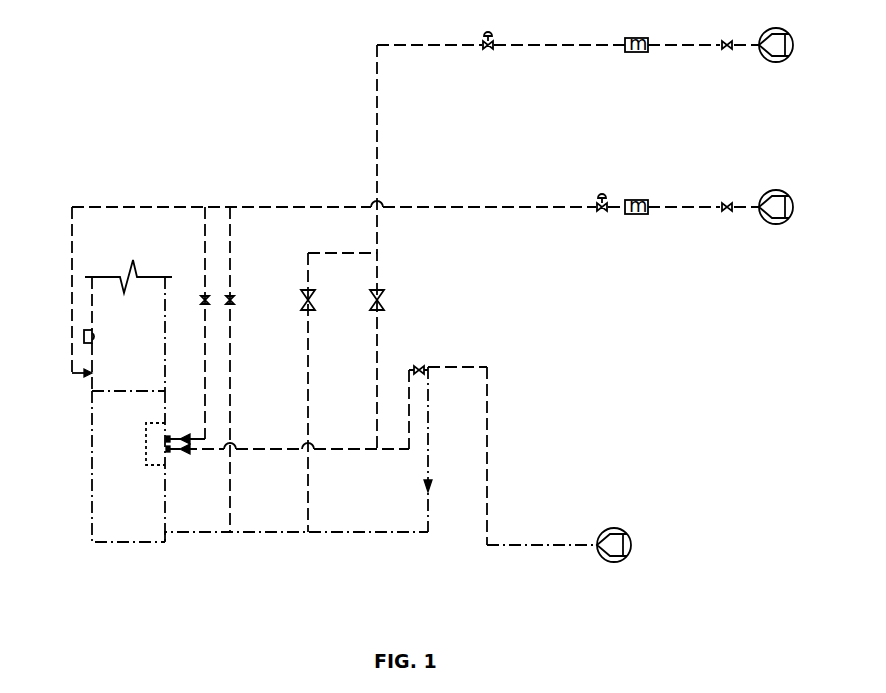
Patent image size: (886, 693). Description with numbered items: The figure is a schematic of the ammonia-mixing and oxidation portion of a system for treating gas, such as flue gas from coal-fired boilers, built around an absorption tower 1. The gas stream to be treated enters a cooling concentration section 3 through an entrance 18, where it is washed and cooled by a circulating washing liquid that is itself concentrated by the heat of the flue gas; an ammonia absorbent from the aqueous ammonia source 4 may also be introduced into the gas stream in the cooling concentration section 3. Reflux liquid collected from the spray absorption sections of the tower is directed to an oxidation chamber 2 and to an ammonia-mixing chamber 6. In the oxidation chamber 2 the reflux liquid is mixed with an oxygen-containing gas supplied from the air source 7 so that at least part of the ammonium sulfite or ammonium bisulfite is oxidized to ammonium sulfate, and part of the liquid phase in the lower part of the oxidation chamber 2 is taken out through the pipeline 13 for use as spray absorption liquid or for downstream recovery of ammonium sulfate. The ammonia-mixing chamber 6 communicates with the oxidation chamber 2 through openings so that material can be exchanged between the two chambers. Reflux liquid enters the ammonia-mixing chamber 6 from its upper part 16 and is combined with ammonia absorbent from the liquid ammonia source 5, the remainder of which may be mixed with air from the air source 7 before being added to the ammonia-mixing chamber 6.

The absorption tower 1 is at (113, 493).
The oxidation chamber 2 is at (108, 495).
The cooling concentration section 3 is at (103, 308).
The aqueous ammonia source 4 is at (775, 225).
The liquid ammonia source 5 is at (775, 63).
The ammonia-mixing chamber 6 is at (160, 458).
The air source 7 is at (613, 564).
The pipeline 13 is at (178, 533).
The upper part 16 is at (186, 436).
The entrance 18 is at (84, 336).